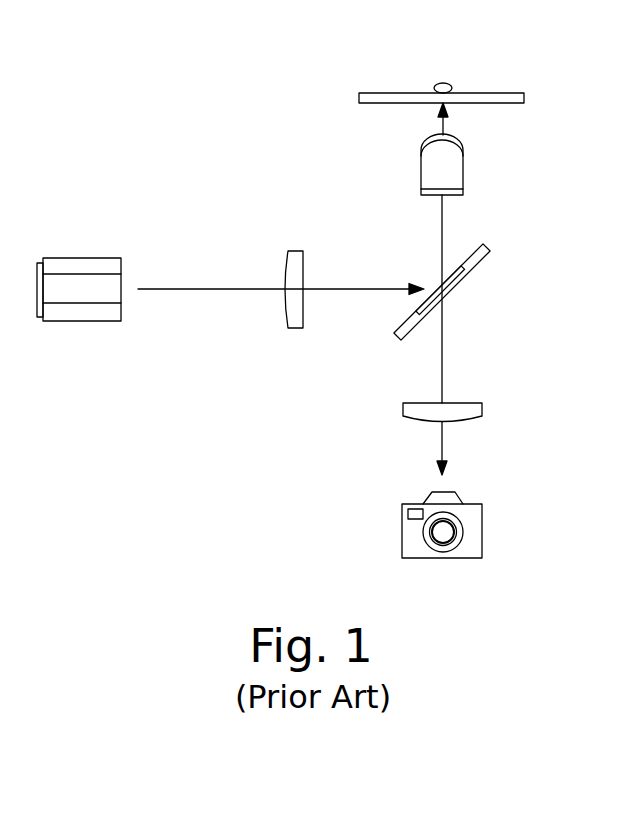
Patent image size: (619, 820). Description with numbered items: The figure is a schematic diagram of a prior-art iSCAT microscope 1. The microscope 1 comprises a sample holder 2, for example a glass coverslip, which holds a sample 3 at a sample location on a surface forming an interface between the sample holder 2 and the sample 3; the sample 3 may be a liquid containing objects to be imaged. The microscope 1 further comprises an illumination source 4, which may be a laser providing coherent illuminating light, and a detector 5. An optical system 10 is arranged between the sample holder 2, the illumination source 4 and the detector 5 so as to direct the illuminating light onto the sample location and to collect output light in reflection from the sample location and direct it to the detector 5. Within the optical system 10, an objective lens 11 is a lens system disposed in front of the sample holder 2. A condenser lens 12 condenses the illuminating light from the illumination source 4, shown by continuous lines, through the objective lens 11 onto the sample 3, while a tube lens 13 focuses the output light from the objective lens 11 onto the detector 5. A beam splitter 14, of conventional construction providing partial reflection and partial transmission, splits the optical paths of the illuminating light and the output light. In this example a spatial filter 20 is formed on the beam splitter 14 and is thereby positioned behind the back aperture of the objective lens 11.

The microscope 1 is at (226, 148).
The sample holder 2 is at (359, 98).
The sample 3 is at (436, 85).
The illumination source 4 is at (82, 352).
The detector 5 is at (482, 530).
The optical system 10 is at (479, 335).
The objective lens 11 is at (463, 170).
The condenser lens 12 is at (284, 309).
The tube lens 13 is at (413, 422).
The beam splitter 14 is at (480, 265).
The spatial filter 20 is at (432, 291).